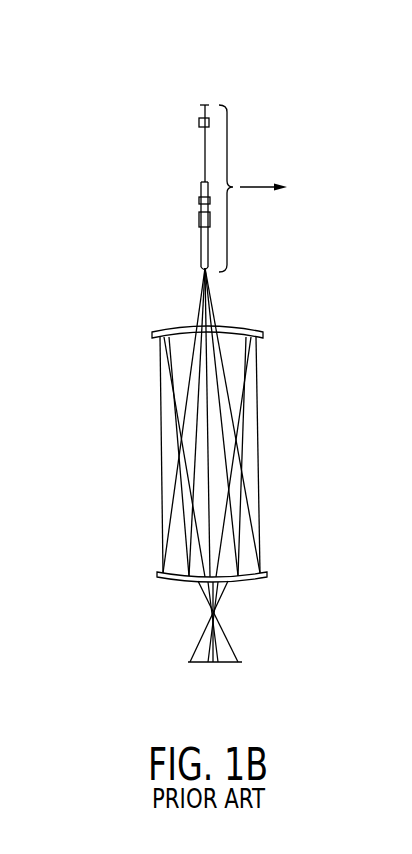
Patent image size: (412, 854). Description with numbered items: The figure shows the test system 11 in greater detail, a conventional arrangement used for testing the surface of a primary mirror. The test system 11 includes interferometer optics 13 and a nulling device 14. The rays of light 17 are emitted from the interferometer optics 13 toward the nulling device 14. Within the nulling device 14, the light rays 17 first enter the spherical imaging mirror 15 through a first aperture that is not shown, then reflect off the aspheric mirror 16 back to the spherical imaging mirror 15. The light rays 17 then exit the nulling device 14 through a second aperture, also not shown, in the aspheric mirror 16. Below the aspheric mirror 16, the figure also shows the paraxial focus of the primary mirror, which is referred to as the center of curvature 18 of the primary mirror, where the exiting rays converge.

The test system 11 is at (212, 92).
The interferometer optics 13 is at (229, 223).
The nulling device 14 is at (127, 369).
The spherical imaging mirror 15 is at (243, 328).
The aspheric mirror 16 is at (238, 583).
The rays of light 17 is at (240, 433).
The center of curvature 18 is at (228, 663).